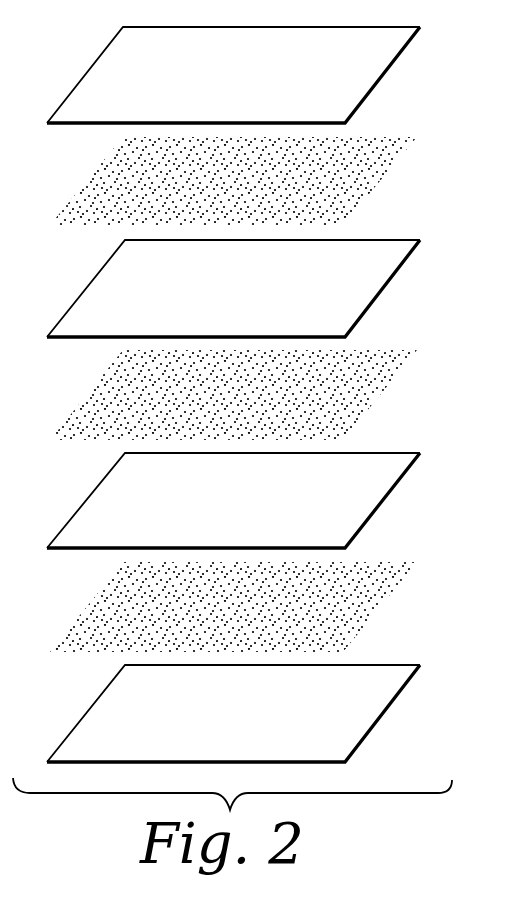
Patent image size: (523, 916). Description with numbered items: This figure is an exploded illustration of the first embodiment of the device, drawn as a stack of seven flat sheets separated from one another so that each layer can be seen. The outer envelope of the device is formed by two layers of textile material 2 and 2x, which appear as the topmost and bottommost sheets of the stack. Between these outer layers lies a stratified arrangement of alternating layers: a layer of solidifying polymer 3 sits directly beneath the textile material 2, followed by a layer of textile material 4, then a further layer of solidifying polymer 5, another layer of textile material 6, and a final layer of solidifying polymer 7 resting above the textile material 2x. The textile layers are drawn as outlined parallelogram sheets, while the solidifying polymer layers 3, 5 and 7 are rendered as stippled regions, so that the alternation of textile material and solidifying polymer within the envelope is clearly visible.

The textile material 2 is at (390, 65).
The solidifying polymer 3 is at (388, 160).
The textile material 4 is at (390, 278).
The solidifying polymer 5 is at (388, 372).
The textile material 6 is at (390, 491).
The solidifying polymer 7 is at (388, 585).
The textile material 2x is at (390, 703).